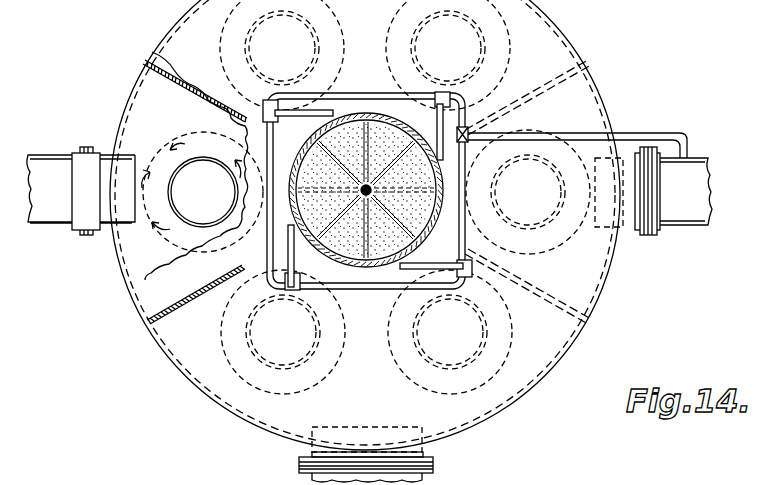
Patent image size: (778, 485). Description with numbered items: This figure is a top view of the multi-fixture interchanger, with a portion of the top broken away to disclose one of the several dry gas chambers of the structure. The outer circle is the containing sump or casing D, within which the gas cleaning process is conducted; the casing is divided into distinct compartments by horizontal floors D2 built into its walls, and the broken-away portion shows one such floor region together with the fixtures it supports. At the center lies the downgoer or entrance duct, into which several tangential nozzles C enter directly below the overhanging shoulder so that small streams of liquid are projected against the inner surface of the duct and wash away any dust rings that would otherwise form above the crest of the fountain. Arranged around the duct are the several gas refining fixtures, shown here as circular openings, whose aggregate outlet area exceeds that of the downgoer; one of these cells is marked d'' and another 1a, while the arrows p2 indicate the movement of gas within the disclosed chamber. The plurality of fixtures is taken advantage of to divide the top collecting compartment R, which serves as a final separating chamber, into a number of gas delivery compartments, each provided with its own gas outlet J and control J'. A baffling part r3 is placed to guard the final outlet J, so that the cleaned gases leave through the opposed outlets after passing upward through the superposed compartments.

The tangential nozzle C is at (342, 108).
The cell tube 1a is at (203, 192).
The circulation path p2 is at (210, 160).
The baffling part r3 is at (123, 157).
The gas outlet J is at (653, 191).
The control J' is at (373, 209).
The collecting compartment R is at (188, 166).
The floor D2 is at (195, 192).
The cell d'' is at (528, 205).
The sump or casing D is at (594, 323).